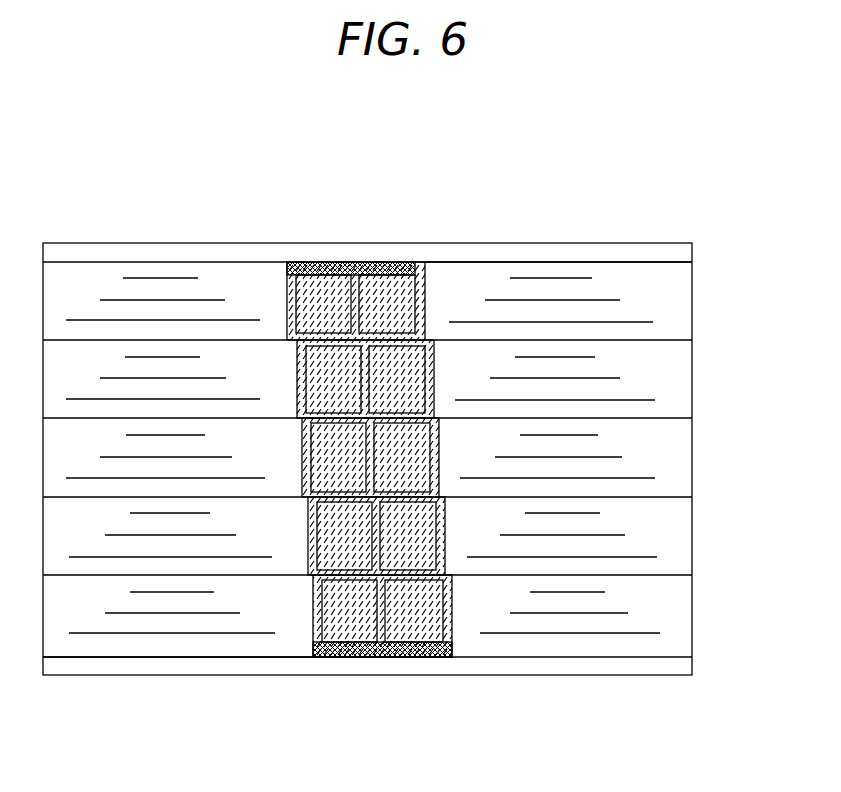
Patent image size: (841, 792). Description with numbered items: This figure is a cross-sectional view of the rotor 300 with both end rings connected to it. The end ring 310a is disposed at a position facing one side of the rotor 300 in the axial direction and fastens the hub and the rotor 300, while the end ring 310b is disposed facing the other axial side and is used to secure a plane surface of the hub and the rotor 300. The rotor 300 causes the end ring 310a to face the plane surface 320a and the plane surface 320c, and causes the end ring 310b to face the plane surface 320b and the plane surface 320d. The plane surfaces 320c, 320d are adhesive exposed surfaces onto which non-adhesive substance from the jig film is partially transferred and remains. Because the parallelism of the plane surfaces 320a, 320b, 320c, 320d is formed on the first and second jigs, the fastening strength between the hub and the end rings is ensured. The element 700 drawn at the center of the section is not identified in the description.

The rotor 300 is at (673, 450).
The end ring 310a is at (553, 252).
The end ring 310b is at (643, 667).
The plane surface 320a is at (482, 262).
The plane surface 320b is at (150, 657).
The adhesive exposed surface 320c is at (387, 262).
The adhesive exposed surface 320d is at (313, 657).
The via conductor stack 700 is at (287, 265).